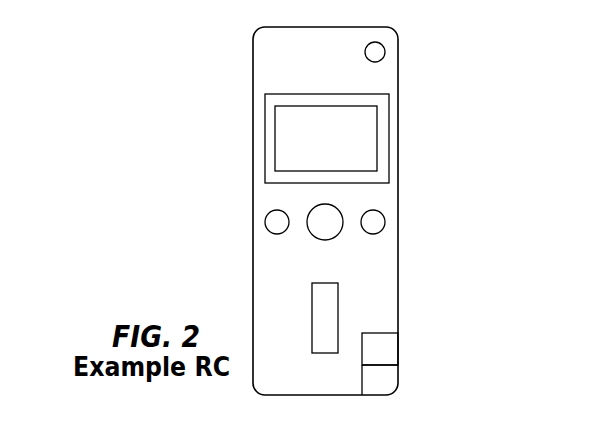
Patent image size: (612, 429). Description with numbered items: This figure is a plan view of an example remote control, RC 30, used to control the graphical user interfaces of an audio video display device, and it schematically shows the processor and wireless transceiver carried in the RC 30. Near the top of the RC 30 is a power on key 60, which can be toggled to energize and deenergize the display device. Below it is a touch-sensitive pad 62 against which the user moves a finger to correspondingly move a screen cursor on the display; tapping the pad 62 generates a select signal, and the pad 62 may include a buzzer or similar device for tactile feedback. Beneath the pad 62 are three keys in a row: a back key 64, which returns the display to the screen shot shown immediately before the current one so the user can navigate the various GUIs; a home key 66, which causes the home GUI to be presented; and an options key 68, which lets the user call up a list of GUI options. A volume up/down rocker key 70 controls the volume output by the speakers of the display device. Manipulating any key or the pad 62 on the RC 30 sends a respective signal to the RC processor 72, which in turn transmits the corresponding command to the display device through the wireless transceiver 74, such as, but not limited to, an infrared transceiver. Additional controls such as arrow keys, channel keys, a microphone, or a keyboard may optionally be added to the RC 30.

The remote control 30 is at (230, 80).
The power on key 60 is at (385, 51).
The touch-sensitive pad 62 is at (368, 123).
The back key 64 is at (265, 222).
The home key 66 is at (320, 204).
The options key 68 is at (385, 221).
The volume up/down rocker key 70 is at (338, 313).
The RC processor 72 is at (398, 345).
The wireless transceiver 74 is at (398, 378).